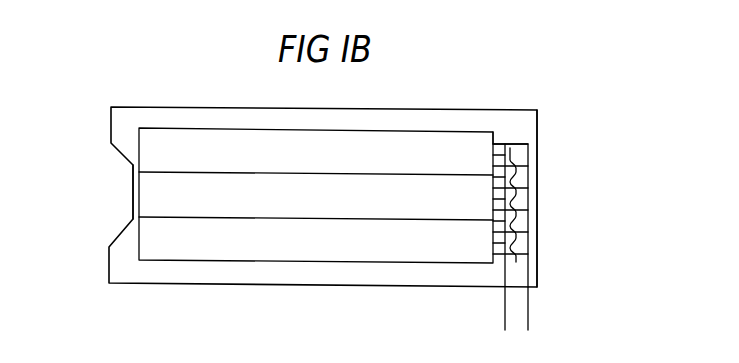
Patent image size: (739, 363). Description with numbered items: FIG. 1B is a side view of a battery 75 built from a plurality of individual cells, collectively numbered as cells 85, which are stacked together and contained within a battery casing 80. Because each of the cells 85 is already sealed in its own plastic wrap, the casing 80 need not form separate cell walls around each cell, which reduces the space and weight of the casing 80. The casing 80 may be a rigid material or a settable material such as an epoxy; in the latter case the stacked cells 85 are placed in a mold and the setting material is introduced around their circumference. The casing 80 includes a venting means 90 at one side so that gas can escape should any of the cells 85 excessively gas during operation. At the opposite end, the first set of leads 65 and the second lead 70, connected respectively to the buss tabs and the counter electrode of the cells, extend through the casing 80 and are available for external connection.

The first set of leads 65 is at (527, 318).
The second lead 70 is at (507, 317).
The battery 75 is at (128, 95).
The battery casing 80 is at (462, 120).
The cells 85 is at (231, 145).
The venting means 90 is at (126, 206).